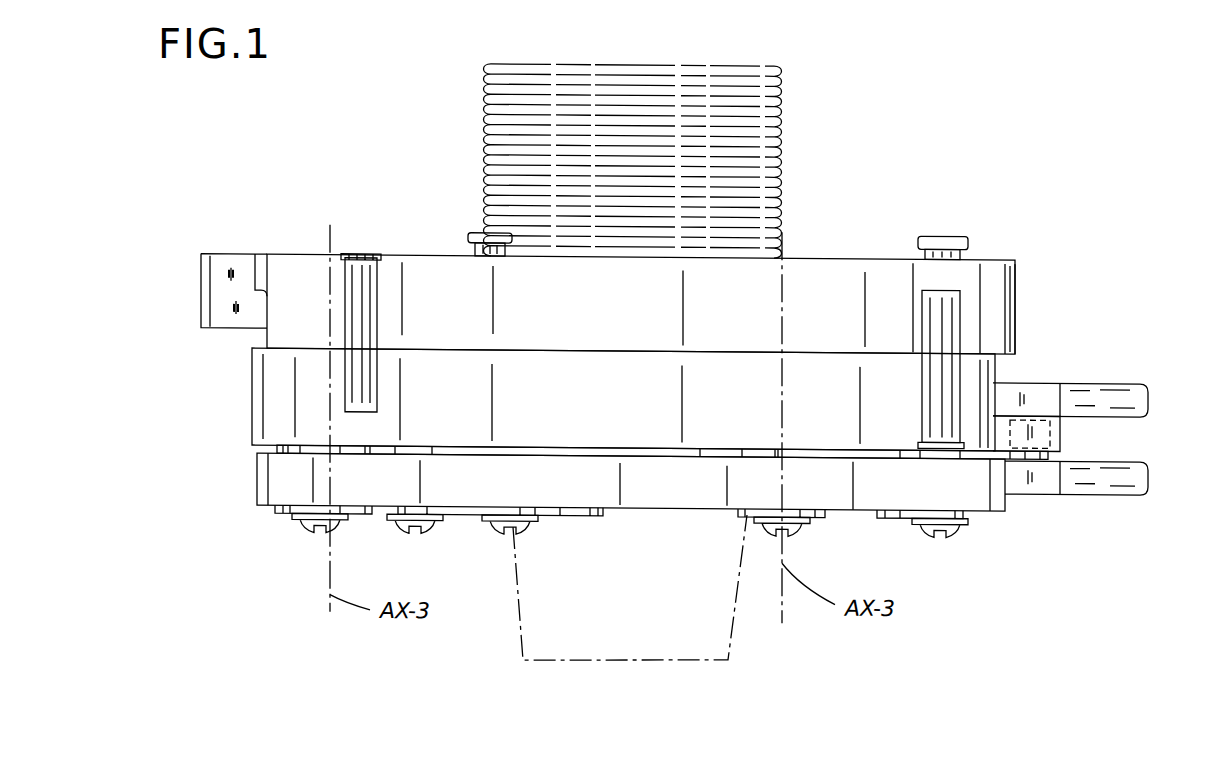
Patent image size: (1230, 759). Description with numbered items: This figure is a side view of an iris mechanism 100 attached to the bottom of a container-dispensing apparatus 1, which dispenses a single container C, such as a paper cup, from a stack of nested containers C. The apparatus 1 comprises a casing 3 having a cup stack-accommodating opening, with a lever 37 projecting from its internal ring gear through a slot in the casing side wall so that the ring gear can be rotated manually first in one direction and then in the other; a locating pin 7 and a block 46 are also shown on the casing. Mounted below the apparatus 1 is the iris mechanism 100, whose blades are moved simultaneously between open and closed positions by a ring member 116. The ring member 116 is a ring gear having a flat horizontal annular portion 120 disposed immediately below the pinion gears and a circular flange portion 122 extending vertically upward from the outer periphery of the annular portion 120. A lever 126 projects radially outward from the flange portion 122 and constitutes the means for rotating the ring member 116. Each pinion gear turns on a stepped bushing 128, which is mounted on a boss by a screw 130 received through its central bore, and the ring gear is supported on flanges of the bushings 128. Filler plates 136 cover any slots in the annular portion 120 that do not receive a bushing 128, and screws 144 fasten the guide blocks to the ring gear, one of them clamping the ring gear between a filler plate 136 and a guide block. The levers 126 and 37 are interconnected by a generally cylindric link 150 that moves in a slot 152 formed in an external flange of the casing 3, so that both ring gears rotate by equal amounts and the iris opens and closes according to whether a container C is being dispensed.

The container-dispensing apparatus 1 is at (212, 349).
The casing 3 is at (1022, 297).
The locating pin 7 is at (360, 252).
The lever 37 is at (1150, 397).
The stop block 46 is at (201, 303).
The iris mechanism 100 is at (238, 507).
The ring member 116 is at (701, 508).
The annular portion 120 is at (724, 505).
The flange portion 122 is at (663, 487).
The lever 126 is at (1119, 488).
The stepped bushing 128 is at (286, 511).
The screw 130 is at (343, 517).
The filler plate 136 is at (575, 513).
The screw 144 is at (497, 526).
The link 150 is at (1050, 447).
The slot 152 is at (1085, 414).
The container C is at (780, 146).